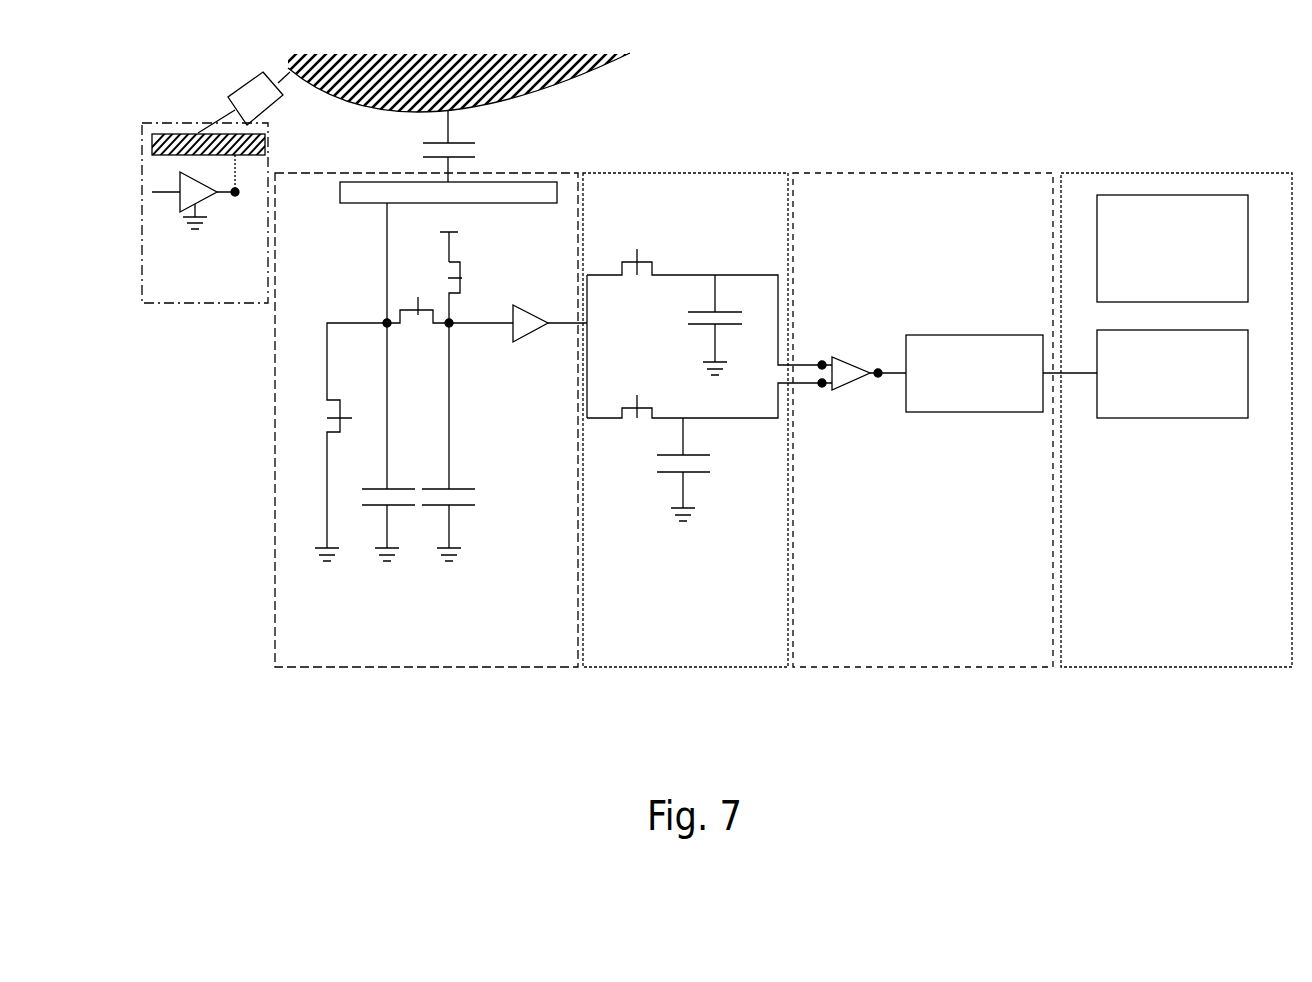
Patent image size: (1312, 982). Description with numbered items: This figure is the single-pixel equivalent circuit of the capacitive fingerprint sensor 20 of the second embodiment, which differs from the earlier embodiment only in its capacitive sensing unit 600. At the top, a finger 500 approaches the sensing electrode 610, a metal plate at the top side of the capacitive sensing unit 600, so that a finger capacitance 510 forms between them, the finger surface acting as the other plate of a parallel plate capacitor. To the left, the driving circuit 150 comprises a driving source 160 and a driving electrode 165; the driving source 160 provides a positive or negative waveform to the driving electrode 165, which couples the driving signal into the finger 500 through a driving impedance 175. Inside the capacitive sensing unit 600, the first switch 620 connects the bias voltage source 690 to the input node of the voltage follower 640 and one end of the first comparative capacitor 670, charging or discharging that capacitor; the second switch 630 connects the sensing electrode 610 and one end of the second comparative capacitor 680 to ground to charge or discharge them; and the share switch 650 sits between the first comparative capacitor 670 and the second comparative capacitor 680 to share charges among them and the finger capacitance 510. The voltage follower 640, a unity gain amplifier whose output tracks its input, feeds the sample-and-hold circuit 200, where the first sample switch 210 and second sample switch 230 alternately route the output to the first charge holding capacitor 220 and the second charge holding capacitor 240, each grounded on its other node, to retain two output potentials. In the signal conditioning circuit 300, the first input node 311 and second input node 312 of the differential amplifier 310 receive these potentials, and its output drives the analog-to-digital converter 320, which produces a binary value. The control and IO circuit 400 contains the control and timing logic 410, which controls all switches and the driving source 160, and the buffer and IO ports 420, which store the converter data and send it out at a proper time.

The capacitive fingerprint sensor 20 is at (1253, 67).
The driving circuit 150 is at (215, 199).
The driving source 160 is at (206, 198).
The driving electrode 165 is at (181, 134).
The driving impedance 175 is at (250, 84).
The finger 500 is at (383, 108).
The finger capacitance 510 is at (460, 141).
The capacitive sensing unit 600 is at (330, 668).
The sensing electrode 610 is at (357, 195).
The first switch 620 is at (462, 278).
The second switch 630 is at (332, 410).
The voltage follower 640 is at (535, 332).
The share switch 650 is at (422, 318).
The first comparative capacitor 670 is at (465, 507).
The second comparative capacitor 680 is at (403, 507).
The bias voltage source 690 is at (458, 232).
The sample-and-hold circuit 200 is at (668, 668).
The first sample switch 210 is at (645, 262).
The first charge holding capacitor 220 is at (703, 330).
The second sample switch 230 is at (652, 410).
The second charge holding capacitor 240 is at (672, 477).
The signal conditioning circuit 300 is at (908, 668).
The differential amplifier 310 is at (845, 388).
The first input node 311 is at (826, 360).
The second input node 312 is at (820, 388).
The analog-to-digital converter 320 is at (975, 412).
The control and IO circuit 400 is at (1157, 668).
The control and timing logic 410 is at (1172, 248).
The buffer and IO ports 420 is at (1172, 374).